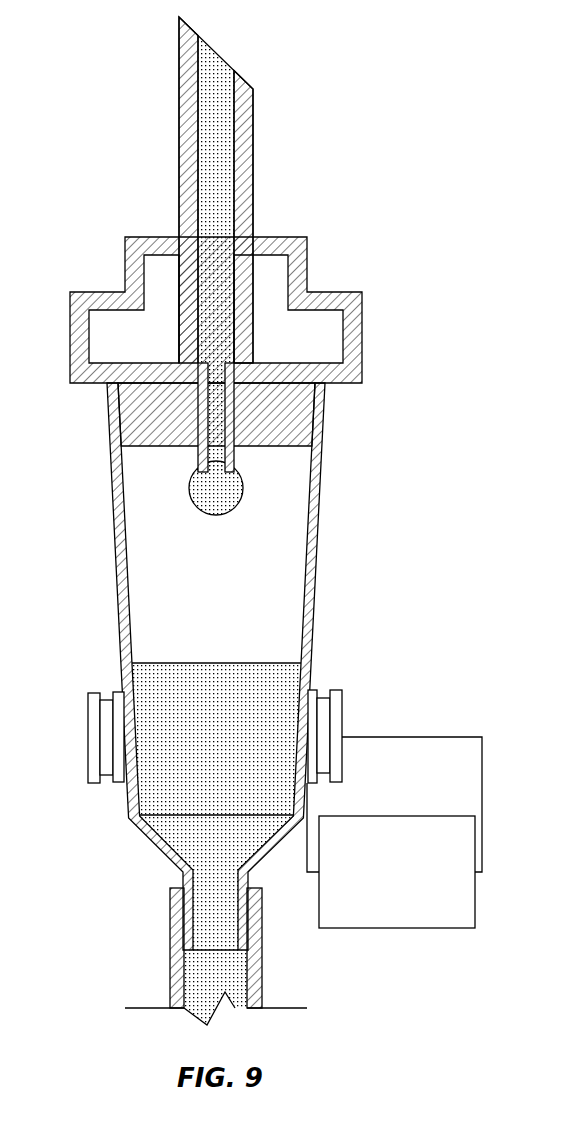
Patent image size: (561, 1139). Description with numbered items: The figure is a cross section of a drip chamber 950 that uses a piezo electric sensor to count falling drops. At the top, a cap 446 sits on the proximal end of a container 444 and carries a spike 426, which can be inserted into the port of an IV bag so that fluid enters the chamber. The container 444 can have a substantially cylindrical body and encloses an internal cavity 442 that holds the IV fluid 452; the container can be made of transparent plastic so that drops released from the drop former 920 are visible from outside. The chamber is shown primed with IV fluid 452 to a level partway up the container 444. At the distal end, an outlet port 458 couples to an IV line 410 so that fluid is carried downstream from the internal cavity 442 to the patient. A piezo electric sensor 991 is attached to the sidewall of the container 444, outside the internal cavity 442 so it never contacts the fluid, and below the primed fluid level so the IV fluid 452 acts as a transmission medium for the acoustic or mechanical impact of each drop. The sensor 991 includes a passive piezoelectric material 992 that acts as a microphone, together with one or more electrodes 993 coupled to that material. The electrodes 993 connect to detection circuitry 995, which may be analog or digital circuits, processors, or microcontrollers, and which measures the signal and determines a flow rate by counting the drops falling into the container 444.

The drip chamber 950 is at (161, 144).
The spike 426 is at (254, 128).
The cap 446 is at (307, 266).
The drop former 920 is at (248, 466).
The IV fluid 452 is at (217, 672).
The internal cavity 442 is at (255, 666).
The container 444 is at (312, 638).
The piezo electric sensor 991 is at (294, 712).
The piezoelectric material 992 is at (324, 698).
The electrodes 993 is at (342, 712).
The detection circuitry 995 is at (423, 928).
The outlet port 458 is at (206, 962).
The IV line 410 is at (262, 982).